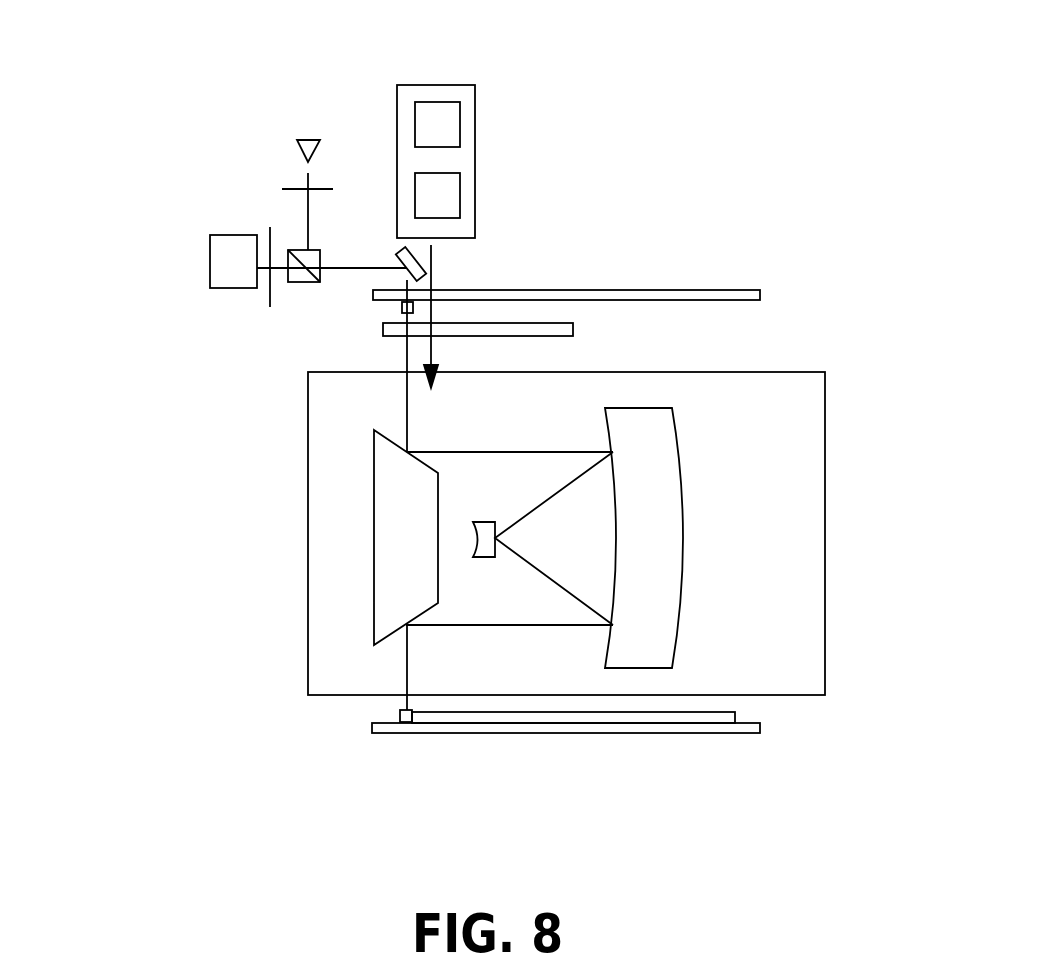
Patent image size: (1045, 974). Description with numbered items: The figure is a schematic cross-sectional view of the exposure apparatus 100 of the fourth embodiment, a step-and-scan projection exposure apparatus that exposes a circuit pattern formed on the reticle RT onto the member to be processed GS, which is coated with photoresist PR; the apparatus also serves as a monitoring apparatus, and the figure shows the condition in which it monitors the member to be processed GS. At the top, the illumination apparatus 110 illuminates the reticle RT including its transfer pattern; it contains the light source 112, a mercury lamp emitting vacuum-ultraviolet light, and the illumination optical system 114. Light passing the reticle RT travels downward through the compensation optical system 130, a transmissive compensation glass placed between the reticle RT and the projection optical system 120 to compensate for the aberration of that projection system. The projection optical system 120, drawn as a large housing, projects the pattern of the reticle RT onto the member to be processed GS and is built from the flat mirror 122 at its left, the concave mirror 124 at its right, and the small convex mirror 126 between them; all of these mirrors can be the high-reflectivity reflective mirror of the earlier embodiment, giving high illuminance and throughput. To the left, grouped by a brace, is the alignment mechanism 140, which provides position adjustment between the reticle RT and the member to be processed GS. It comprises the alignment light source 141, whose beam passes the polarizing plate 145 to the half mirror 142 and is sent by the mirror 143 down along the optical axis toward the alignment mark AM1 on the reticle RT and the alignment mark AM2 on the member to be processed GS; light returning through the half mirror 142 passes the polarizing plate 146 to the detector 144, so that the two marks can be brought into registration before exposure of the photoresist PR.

The exposure apparatus 100 is at (563, 33).
The illumination apparatus 110 is at (475, 127).
The light source 112 is at (452, 115).
The illumination optical system 114 is at (448, 200).
The projection optical system 120 is at (807, 388).
The flat mirror 122 is at (400, 528).
The concave mirror 124 is at (657, 481).
The convex mirror 126 is at (487, 558).
The compensation optical system 130 is at (573, 329).
The alignment mechanism 140 is at (117, 43).
The alignment light source 141 is at (303, 138).
The half mirror 142 is at (295, 250).
The mirror 143 is at (400, 251).
The detector 144 is at (233, 235).
The polarizing plate 145 is at (293, 187).
The polarizing plate 146 is at (267, 298).
The reticle RT is at (575, 290).
The photoresist PR is at (735, 714).
The member to be processed GS is at (760, 728).
The alignment mark AM1 is at (400, 308).
The alignment mark AM2 is at (400, 711).